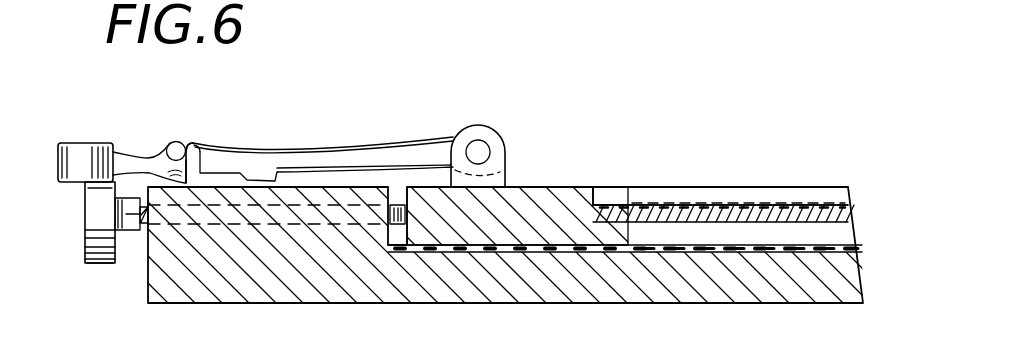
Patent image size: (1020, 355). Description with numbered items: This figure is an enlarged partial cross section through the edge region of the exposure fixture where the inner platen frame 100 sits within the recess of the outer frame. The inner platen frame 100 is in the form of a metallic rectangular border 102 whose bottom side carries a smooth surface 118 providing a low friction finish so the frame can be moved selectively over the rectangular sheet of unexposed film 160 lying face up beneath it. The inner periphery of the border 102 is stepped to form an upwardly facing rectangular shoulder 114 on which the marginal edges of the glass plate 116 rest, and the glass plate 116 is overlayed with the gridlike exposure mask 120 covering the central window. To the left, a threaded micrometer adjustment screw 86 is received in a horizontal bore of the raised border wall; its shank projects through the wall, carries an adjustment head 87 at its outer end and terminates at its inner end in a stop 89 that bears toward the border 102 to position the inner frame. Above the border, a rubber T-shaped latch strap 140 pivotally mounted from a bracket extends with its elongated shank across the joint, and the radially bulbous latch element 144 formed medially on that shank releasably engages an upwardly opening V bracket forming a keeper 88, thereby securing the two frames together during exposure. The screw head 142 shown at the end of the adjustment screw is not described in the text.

The micrometer adjustment screw 86 is at (85, 246).
The adjustment head 87 is at (98, 266).
The keeper 88 is at (172, 152).
The stop 89 is at (407, 222).
The inner platen frame 100 is at (516, 176).
The rectangular border 102 is at (555, 186).
The rectangular shoulder 114 is at (600, 250).
The glass plate 116 is at (852, 212).
The smooth surface 118 is at (463, 253).
The exposure mask 120 is at (828, 203).
The latch strap 140 is at (270, 155).
The screw head 142 is at (76, 143).
The latch element 144 is at (188, 143).
The unexposed film 160 is at (853, 248).